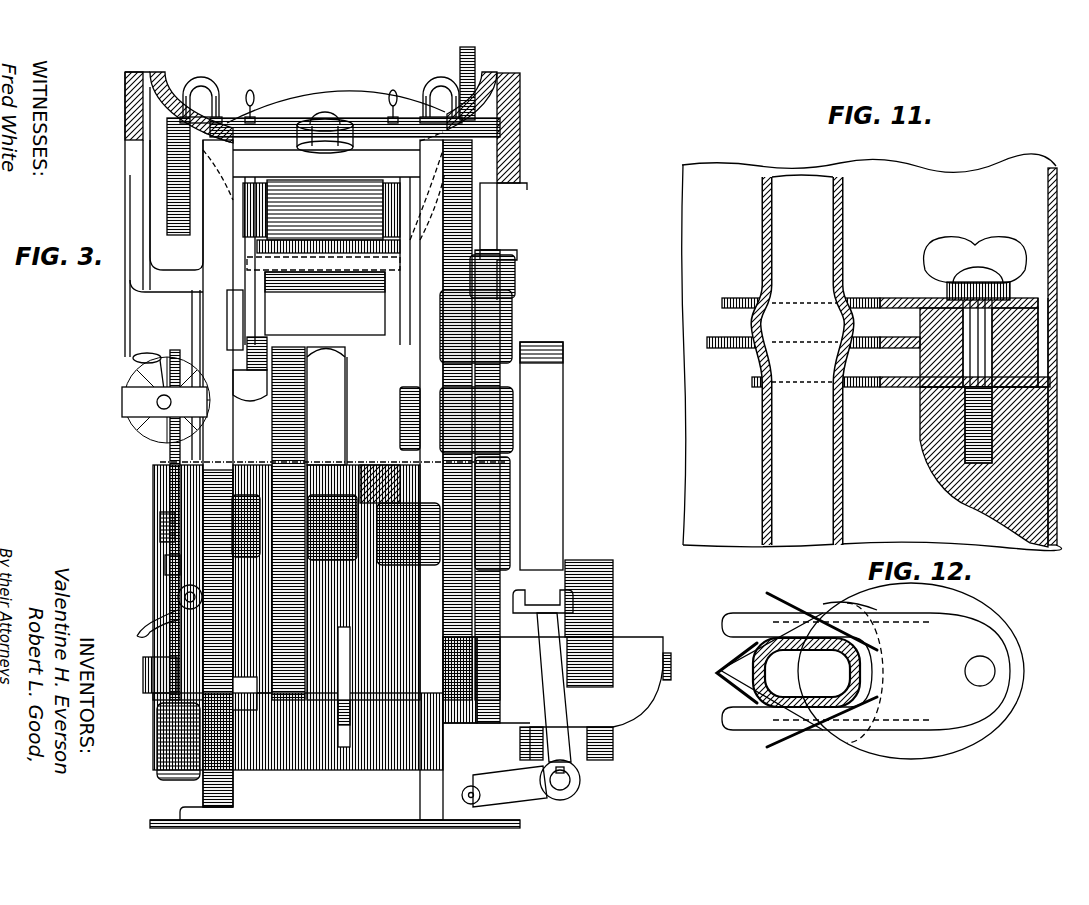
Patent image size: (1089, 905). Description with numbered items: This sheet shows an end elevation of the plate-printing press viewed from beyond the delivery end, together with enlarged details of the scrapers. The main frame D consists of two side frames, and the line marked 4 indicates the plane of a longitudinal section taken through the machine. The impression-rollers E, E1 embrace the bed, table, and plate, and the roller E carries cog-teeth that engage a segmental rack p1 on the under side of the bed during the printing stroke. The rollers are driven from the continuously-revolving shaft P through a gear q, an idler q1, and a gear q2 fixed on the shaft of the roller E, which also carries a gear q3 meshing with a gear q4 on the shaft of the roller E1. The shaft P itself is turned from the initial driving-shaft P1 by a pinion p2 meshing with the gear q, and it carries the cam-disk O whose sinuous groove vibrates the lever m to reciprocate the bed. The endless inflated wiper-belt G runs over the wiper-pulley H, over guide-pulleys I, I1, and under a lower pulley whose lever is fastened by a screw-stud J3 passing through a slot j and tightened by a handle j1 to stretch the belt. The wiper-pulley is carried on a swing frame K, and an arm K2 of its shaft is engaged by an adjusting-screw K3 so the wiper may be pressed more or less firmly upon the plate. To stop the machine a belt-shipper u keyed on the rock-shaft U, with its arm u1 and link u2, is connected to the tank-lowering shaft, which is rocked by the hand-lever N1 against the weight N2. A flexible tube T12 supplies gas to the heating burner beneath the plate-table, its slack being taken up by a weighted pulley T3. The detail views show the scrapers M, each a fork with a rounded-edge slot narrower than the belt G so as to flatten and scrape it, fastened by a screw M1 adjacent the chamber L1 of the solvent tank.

In FIG. 3, the guide-pulley I1 is at (199, 93).
In FIG. 3, the section line 4 is at (247, 115).
In FIG. 3, the wiper-pulley H is at (343, 106).
In FIG. 3, the guide-pulley I is at (437, 95).
In FIG. 3, the swing frame K is at (355, 146).
In FIG. 3, the impression-roller E1 is at (325, 210).
In FIG. 3, the gear q4 is at (497, 205).
In FIG. 3, the segmental rack p1 is at (395, 268).
In FIG. 3, the gear q3 is at (497, 276).
In FIG. 3, the gear q2 is at (503, 334).
In FIG. 3, the impression-roller E is at (325, 303).
In FIG. 3, the continuously-revolving shaft P is at (367, 553).
In FIG. 3, the arm K2 is at (135, 318).
In FIG. 3, the lever m is at (250, 395).
In FIG. 3, the cam-disk O is at (326, 406).
In FIG. 3, the flexible tube T12 is at (347, 420).
In FIG. 3, the idler q1 is at (515, 430).
In FIG. 3, the gear q is at (487, 520).
In FIG. 3, the adjusting-screw K3 is at (158, 405).
In FIG. 3, the hand-lever N1 is at (172, 522).
In FIG. 3, the slot j is at (168, 566).
In FIG. 3, the screw-stud J3 is at (185, 597).
In FIG. 3, the handle j1 is at (145, 623).
In FIG. 3, the weighted pulley T3 is at (352, 641).
In FIG. 3, the initial driving-shaft P1 is at (670, 668).
In FIG. 3, the pinion p2 is at (500, 683).
In FIG. 3, the belt-shipper u is at (556, 701).
In FIG. 3, the weight N2 is at (160, 735).
In FIG. 3, the main frame D is at (430, 787).
In FIG. 3, the link u2 is at (478, 785).
In FIG. 3, the arm u1 is at (510, 786).
In FIG. 3, the rock-shaft U is at (570, 782).
In FIG. 11, the wiper-belt G is at (802, 360).
In FIG. 12, the wiper-belt G is at (806, 672).
In FIG. 11, the scraper M is at (878, 332).
In FIG. 12, the scraper M is at (873, 671).
In FIG. 11, the screw M1 is at (975, 257).
In FIG. 11, the chamber L1 is at (1057, 225).